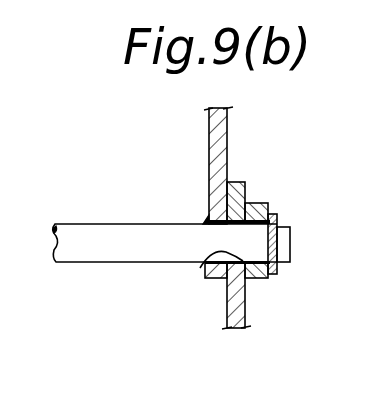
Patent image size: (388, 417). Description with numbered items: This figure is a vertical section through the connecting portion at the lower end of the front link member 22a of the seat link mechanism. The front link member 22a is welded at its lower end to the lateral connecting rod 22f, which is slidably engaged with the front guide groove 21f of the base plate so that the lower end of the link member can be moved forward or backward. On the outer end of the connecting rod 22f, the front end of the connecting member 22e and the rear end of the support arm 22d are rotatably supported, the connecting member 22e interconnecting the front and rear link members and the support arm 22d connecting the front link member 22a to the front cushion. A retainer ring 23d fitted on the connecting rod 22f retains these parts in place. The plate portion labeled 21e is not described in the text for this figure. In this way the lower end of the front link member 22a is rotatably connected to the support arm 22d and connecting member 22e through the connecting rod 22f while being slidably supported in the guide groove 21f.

The front link member 22a is at (224, 133).
The connecting member 22e is at (252, 203).
The retainer ring 23d is at (278, 212).
The lateral connecting rod 22f is at (131, 248).
The front guide groove 21f is at (200, 268).
The lower plate 21e is at (233, 330).
The support arm 22d is at (263, 282).